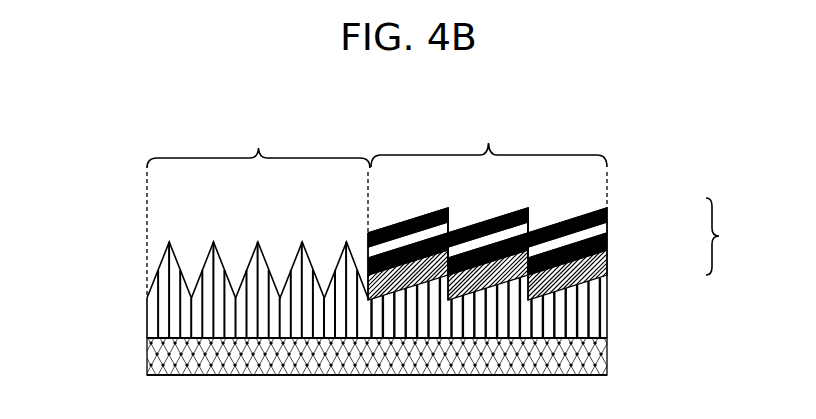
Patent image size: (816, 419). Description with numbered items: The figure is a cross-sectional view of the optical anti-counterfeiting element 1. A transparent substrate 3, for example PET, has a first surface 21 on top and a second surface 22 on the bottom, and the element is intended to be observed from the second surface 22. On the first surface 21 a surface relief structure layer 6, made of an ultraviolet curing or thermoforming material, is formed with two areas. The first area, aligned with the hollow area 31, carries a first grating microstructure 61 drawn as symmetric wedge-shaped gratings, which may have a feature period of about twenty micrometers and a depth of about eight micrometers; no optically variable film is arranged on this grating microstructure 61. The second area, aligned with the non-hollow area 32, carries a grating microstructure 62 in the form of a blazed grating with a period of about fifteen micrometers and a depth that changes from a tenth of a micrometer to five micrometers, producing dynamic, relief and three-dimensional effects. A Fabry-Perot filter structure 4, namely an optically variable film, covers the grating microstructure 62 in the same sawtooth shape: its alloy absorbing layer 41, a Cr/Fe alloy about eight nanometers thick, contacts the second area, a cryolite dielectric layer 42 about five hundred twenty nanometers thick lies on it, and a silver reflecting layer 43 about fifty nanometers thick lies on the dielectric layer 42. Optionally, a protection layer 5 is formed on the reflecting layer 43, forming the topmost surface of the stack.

The light emitting device 1 is at (114, 257).
The substrate 3 is at (594, 355).
The first surface 21 is at (139, 338).
The second surface 22 is at (139, 375).
The hollow area 31 is at (258, 134).
The non-hollow area 32 is at (489, 134).
The Fabry-Perot filter structure 4 is at (723, 236).
The absorbing layer 41 is at (613, 265).
The dielectric layer 42 is at (613, 246).
The reflecting layer 43 is at (613, 224).
The protection layer 5 is at (612, 204).
The surface relief structure layer 6 is at (589, 320).
The first grating microstructure 61 is at (251, 242).
The grating microstructure 62 is at (593, 288).